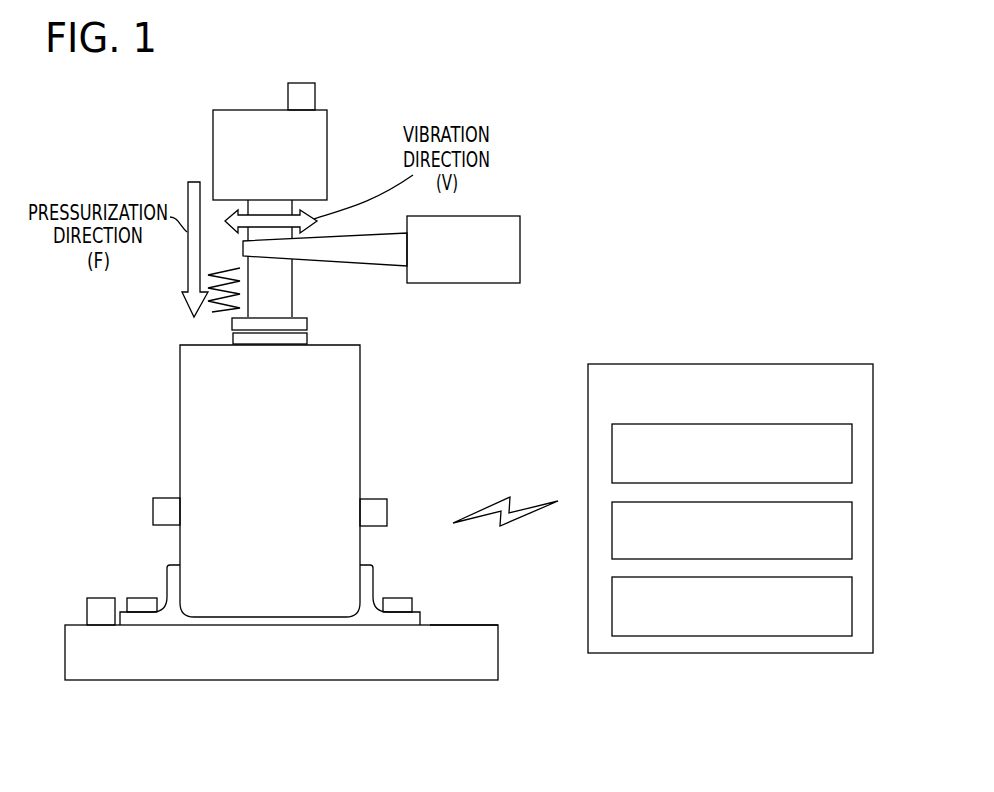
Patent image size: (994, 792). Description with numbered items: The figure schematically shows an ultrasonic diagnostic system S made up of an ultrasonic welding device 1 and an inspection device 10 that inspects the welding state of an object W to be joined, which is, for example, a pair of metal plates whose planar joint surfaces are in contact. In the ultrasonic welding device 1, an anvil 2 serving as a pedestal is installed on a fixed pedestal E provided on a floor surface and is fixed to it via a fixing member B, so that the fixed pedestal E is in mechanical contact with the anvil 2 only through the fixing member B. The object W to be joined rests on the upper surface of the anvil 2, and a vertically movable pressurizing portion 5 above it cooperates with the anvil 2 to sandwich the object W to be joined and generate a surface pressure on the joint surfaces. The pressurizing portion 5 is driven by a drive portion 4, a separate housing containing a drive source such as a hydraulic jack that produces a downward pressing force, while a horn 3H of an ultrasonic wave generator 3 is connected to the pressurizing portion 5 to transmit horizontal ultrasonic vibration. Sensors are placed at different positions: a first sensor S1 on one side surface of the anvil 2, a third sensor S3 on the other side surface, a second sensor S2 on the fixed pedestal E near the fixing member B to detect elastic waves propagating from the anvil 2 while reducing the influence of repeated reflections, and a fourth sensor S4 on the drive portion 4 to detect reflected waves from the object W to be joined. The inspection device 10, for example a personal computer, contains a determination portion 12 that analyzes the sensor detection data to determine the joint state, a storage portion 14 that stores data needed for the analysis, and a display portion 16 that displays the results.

The ultrasonic welding device 1 is at (270, 681).
The anvil 2 is at (352, 388).
The ultrasonic wave generator 3 is at (498, 225).
The horn 3H is at (368, 255).
The drive portion 4 is at (327, 145).
The pressurizing portion 5 is at (283, 289).
The inspection device 10 is at (820, 364).
The determination portion 12 is at (852, 452).
The storage portion 14 is at (852, 530).
The display portion 16 is at (852, 605).
The fixing member B is at (375, 587).
The fixed pedestal E is at (473, 625).
The ultrasonic diagnostic system S is at (388, 786).
The first sensor S1 is at (390, 502).
The second sensor S2 is at (100, 597).
The third sensor S3 is at (170, 495).
The fourth sensor S4 is at (318, 92).
The object to be joined W is at (308, 325).